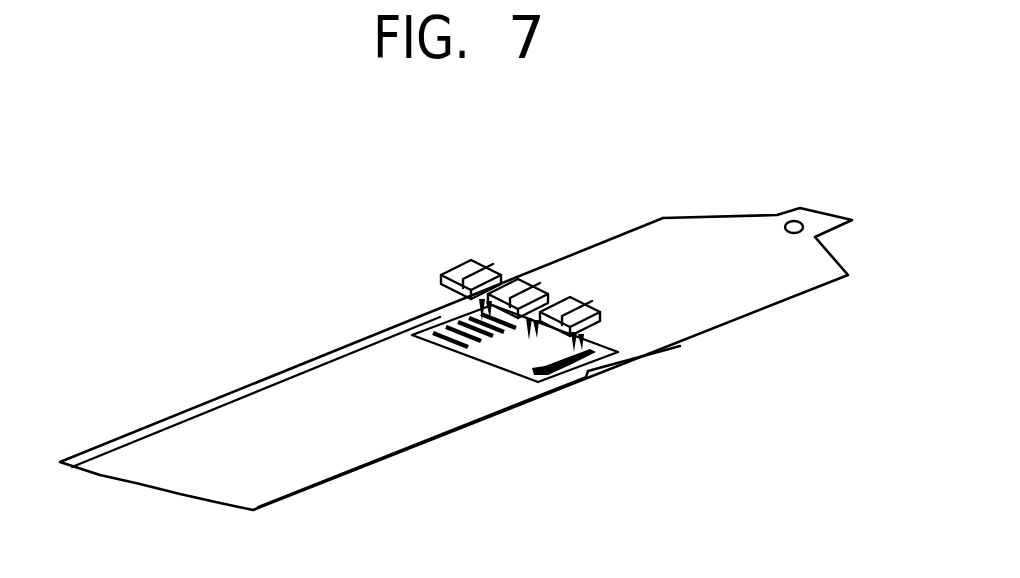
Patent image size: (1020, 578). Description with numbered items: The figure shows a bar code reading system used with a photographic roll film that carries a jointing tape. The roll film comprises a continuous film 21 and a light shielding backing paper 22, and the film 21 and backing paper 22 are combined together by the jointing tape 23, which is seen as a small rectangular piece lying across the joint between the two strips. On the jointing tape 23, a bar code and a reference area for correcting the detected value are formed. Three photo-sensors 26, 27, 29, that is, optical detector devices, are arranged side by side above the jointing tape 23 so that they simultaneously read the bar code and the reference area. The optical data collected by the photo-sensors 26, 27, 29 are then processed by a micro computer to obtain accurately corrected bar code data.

The continuous film 21 is at (381, 432).
The light shielding backing paper 22 is at (668, 323).
The jointing tape 23 is at (512, 375).
The photo-sensor 26 is at (448, 265).
The photo-sensor 27 is at (543, 276).
The photo-sensor 29 is at (581, 298).